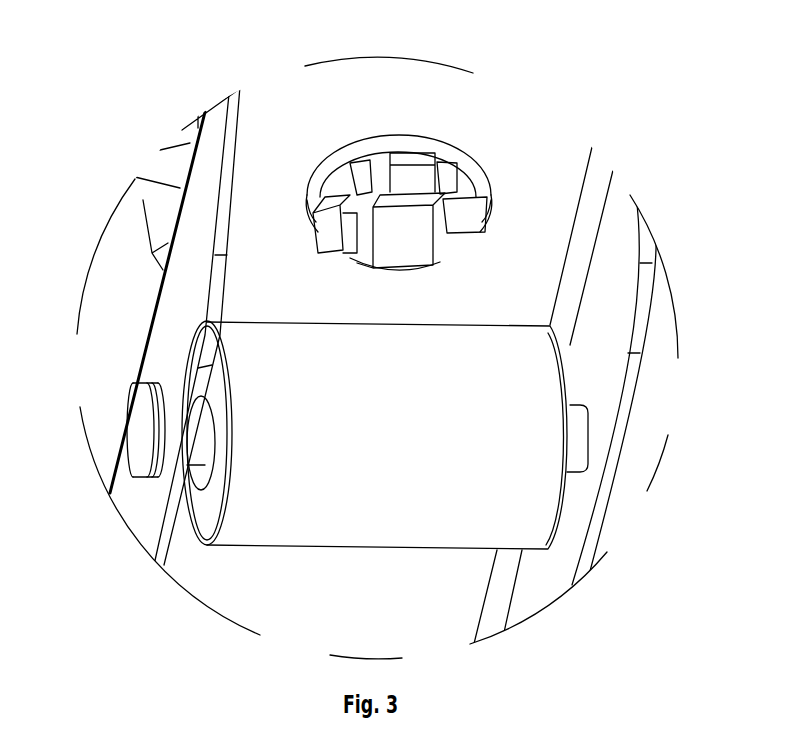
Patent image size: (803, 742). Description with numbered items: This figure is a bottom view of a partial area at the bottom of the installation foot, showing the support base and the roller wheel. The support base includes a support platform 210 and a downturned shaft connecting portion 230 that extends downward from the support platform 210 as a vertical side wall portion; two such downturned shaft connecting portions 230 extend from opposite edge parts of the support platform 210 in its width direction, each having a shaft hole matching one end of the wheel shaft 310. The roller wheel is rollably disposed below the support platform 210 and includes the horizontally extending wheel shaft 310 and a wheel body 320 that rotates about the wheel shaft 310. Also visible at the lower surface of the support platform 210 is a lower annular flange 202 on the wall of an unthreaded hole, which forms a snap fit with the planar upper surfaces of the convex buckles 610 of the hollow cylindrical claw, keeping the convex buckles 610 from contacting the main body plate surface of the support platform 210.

The lower annular flange 202 is at (488, 160).
The convex buckles 610 is at (400, 170).
The downturned shaft connecting portion 230 is at (133, 500).
The support platform 210 is at (213, 557).
The wheel shaft 310 is at (138, 422).
The wheel body 320 is at (522, 512).